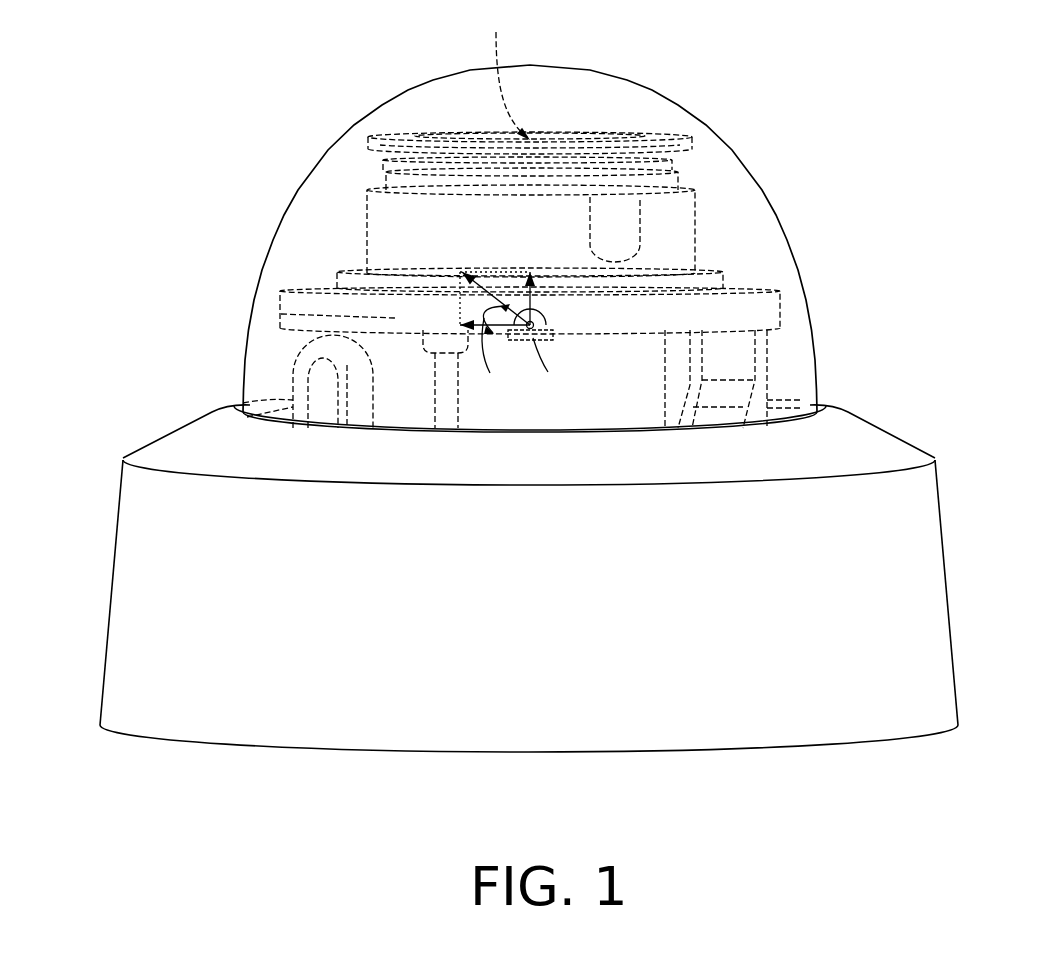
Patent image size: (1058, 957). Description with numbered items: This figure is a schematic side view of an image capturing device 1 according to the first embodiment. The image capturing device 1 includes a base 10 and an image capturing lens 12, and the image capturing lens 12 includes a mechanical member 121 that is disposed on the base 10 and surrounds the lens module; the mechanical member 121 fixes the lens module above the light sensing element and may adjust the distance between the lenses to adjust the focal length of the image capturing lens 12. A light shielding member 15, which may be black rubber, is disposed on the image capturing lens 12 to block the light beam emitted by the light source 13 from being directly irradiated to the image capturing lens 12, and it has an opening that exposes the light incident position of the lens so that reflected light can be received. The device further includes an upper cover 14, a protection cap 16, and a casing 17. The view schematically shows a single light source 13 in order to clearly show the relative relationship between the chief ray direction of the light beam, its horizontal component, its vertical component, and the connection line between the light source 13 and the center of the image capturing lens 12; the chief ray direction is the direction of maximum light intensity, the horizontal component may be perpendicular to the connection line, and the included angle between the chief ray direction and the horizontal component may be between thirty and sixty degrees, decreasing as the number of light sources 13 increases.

The image capturing device 1 is at (932, 816).
The base 10 is at (397, 368).
The image capturing lens 12 is at (450, 206).
The mechanical member 121 is at (387, 225).
The light source 13 is at (548, 321).
The upper cover 14 is at (283, 303).
The light shielding member 15 is at (372, 140).
The protection cap 16 is at (383, 103).
The casing 17 is at (130, 528).